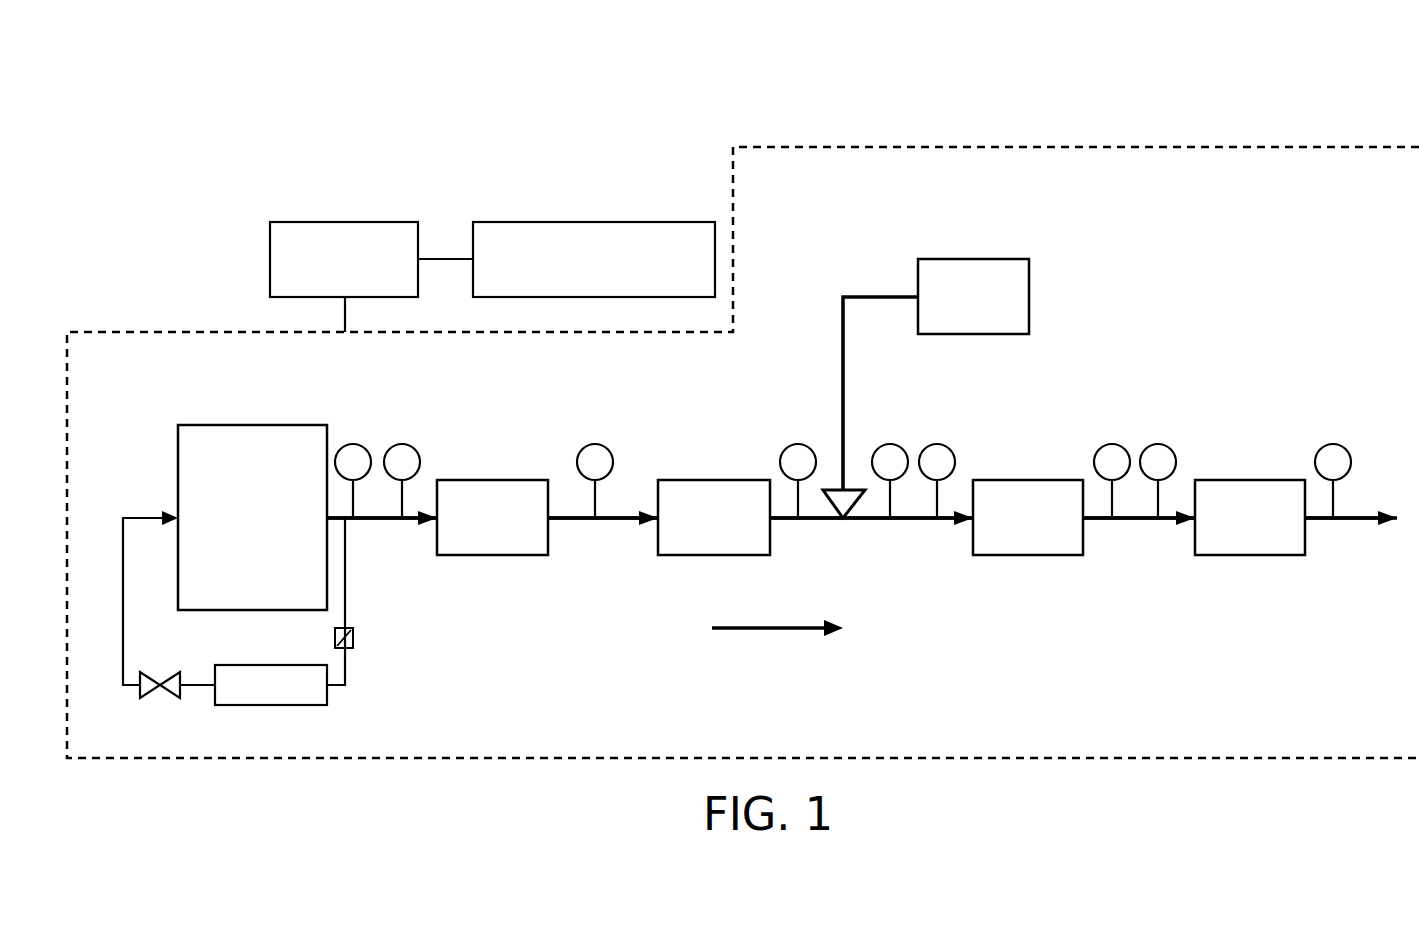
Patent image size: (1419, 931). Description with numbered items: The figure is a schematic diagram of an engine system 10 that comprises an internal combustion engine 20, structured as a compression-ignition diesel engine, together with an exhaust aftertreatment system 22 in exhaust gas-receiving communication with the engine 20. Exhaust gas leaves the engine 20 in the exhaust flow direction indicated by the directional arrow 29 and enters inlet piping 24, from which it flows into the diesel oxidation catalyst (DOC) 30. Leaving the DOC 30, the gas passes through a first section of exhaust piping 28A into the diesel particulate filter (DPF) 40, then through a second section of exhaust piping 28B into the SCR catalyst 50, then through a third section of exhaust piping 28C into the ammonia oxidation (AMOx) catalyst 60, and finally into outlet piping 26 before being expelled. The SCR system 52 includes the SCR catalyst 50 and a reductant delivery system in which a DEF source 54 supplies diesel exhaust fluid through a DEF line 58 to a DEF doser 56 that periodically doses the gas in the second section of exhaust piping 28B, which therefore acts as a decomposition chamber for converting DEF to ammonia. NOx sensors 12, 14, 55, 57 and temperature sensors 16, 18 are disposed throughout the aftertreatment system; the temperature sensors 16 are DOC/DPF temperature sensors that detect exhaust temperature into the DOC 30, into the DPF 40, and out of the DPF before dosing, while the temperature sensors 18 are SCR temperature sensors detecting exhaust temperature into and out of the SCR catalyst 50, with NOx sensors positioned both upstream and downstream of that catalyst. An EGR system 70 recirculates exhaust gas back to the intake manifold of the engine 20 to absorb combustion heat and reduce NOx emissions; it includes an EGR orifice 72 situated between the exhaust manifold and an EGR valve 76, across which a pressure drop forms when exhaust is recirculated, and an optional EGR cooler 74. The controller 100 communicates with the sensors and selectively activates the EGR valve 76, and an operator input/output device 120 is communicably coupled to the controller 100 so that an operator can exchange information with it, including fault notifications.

The engine system 10 is at (1055, 67).
The NOx sensor 12 is at (402, 444).
The NOx sensor 14 is at (1335, 444).
The temperature sensor 16 is at (355, 444).
The temperature sensor 18 is at (891, 444).
The internal combustion engine 20 is at (238, 544).
The exhaust aftertreatment system 22 is at (558, 672).
The inlet piping 24 is at (378, 522).
The outlet piping 26 is at (1352, 522).
The first section of exhaust piping 28A is at (576, 522).
The second section of exhaust piping 28B is at (809, 522).
The third section of exhaust piping 28C is at (1112, 522).
The directional arrow 29 is at (770, 632).
The diesel oxidation catalyst 30 is at (478, 544).
The diesel particulate filter 40 is at (700, 544).
The SCR catalyst 50 is at (1014, 544).
The SCR system 52 is at (910, 376).
The DEF source 54 is at (959, 323).
The NOx sensor 55 is at (937, 444).
The DEF doser 56 is at (851, 522).
The NOx sensor 57 is at (1158, 444).
The DEF line 58 is at (841, 352).
The ammonia oxidation catalyst 60 is at (1236, 544).
The EGR system 70 is at (262, 659).
The EGR orifice 72 is at (354, 636).
The EGR cooler 74 is at (326, 695).
The EGR valve 76 is at (148, 690).
The controller 100 is at (323, 284).
The operator input/output device 120 is at (573, 284).